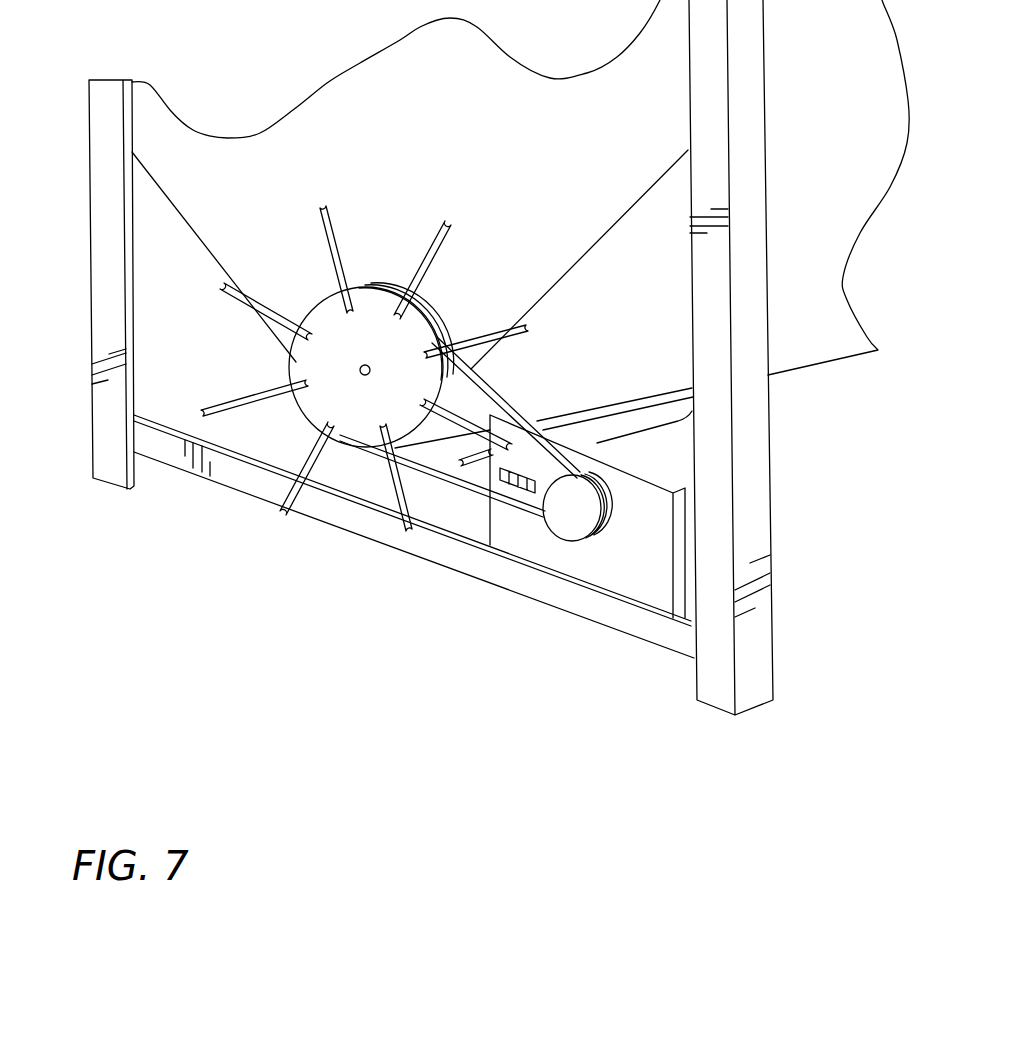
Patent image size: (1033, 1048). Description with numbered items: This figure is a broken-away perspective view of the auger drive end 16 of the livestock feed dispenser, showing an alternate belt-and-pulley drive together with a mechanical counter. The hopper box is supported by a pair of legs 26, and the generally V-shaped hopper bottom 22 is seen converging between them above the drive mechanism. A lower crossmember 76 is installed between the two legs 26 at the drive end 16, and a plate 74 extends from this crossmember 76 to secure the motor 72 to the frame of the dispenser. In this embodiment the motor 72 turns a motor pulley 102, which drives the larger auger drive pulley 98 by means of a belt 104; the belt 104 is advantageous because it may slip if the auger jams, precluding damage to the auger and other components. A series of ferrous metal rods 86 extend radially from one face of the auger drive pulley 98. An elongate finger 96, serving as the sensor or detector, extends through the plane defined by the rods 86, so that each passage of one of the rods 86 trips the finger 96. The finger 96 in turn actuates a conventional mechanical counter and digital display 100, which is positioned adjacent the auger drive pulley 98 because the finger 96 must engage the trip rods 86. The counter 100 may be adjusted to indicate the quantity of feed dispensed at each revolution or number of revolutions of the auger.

The auger drive end 16 is at (472, 102).
The hopper bottom 22 is at (665, 293).
The legs 26 is at (89, 285).
The motor 72 is at (681, 461).
The plate 74 is at (661, 583).
The lower crossmember 76 is at (618, 628).
The rods 86 is at (437, 235).
The finger 96 is at (459, 464).
The auger drive pulley 98 is at (415, 379).
The mechanical counter and digital display 100 is at (518, 490).
The motor pulley 102 is at (595, 521).
The belt 104 is at (510, 402).